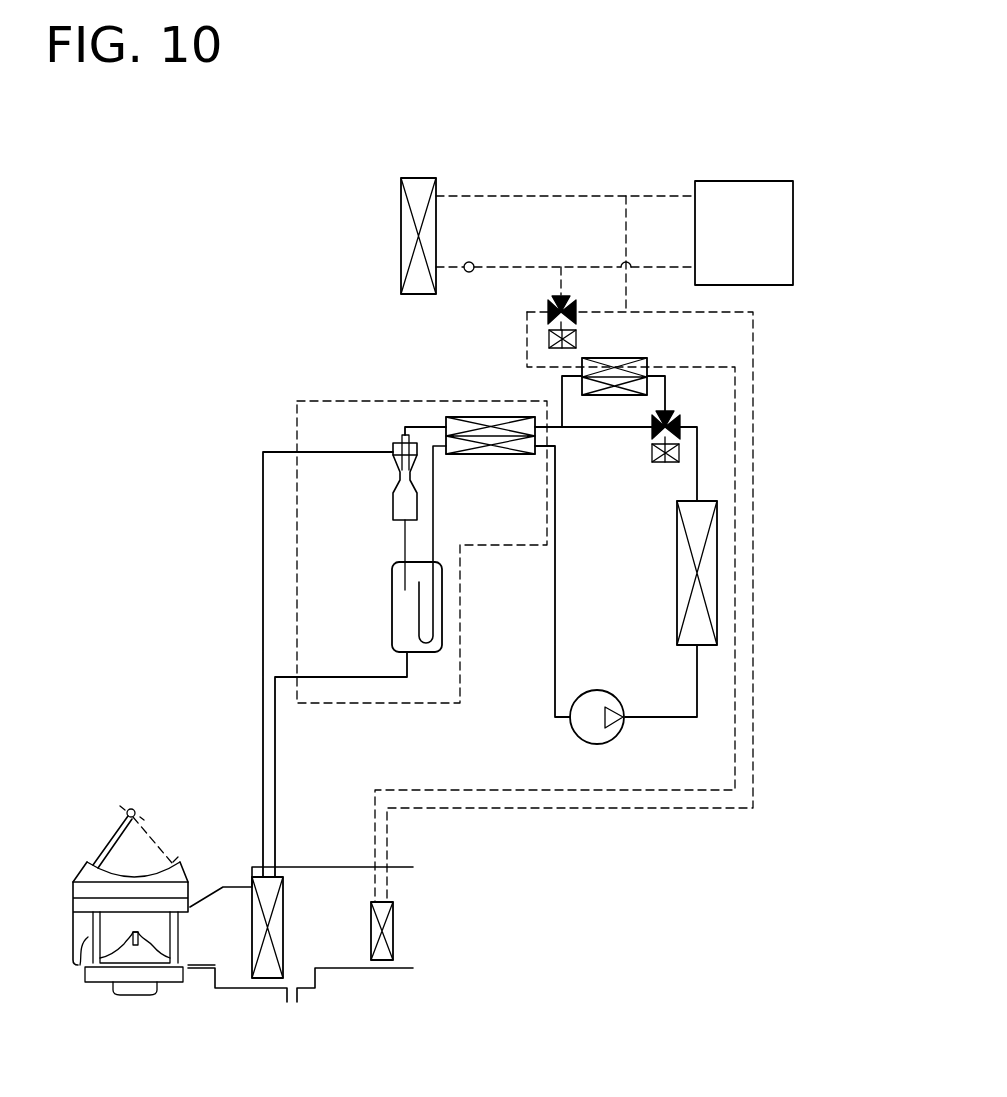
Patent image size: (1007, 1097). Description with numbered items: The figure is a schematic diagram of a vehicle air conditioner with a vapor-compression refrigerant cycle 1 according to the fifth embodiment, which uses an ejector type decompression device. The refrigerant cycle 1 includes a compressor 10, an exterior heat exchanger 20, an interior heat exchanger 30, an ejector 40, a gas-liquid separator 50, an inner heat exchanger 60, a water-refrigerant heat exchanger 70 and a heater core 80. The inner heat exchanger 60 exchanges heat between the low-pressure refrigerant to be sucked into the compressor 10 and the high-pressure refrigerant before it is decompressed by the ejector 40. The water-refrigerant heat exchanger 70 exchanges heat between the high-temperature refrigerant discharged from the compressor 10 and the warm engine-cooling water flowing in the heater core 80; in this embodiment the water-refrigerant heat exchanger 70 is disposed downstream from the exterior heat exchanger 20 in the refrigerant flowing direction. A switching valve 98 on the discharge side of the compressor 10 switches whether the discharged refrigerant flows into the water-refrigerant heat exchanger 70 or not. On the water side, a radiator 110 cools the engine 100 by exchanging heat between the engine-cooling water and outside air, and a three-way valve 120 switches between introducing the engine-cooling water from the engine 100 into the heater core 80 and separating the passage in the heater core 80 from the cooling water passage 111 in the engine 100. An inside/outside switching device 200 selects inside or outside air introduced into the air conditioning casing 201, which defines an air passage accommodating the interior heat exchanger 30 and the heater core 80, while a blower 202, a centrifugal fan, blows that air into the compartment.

The refrigerant cycle 1 is at (772, 398).
The compressor 10 is at (607, 692).
The exterior heat exchanger 20 is at (677, 578).
The interior heat exchanger 30 is at (252, 930).
The ejector 40 is at (395, 478).
The gas-liquid separator 50 is at (443, 606).
The inner heat exchanger 60 is at (484, 417).
The water-refrigerant heat exchanger 70 is at (620, 358).
The heater core 80 is at (393, 932).
The switching valve 98 is at (660, 432).
The engine 100 is at (742, 181).
The radiator 110 is at (401, 236).
The cooling water passage 111 is at (555, 196).
The three-way valve 120 is at (553, 300).
The inside/outside switching device 200 is at (136, 906).
The air conditioning casing 201 is at (320, 867).
The blower 202 is at (79, 965).